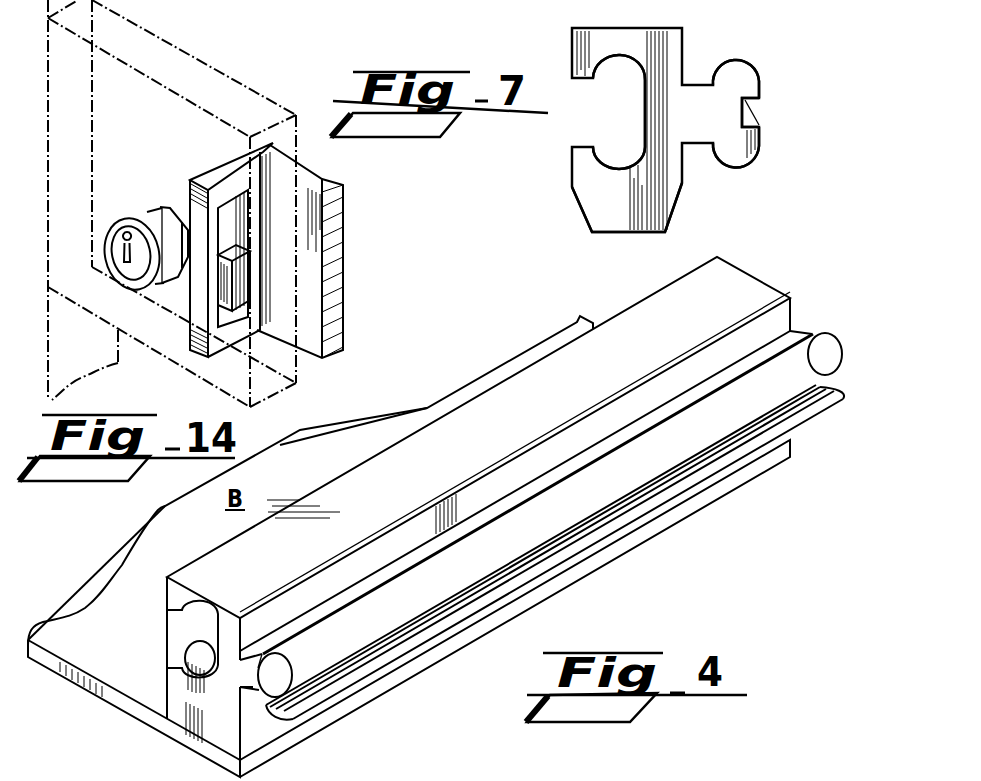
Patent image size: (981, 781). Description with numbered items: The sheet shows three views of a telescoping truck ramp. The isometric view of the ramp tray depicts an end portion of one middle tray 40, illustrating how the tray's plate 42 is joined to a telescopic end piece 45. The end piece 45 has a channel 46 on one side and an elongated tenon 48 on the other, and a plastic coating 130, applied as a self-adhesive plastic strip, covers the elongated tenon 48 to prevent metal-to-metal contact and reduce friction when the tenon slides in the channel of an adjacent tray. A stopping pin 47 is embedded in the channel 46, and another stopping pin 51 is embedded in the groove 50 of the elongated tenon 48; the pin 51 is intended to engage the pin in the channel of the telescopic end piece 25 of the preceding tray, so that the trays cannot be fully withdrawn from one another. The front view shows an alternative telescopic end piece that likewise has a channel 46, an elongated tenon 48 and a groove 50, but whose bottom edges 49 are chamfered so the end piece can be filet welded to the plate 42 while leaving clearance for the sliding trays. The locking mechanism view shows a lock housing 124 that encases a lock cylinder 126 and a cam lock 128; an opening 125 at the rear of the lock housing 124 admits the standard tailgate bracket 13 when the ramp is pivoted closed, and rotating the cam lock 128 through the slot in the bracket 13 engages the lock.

In FIG. 14, the bracket 13 is at (316, 173).
In FIG. 14, the lock housing 124 is at (197, 57).
In FIG. 14, the opening 125 is at (250, 137).
In FIG. 14, the lock cylinder 126 is at (127, 226).
In FIG. 14, the cam lock 128 is at (245, 262).
In FIG. 7, the telescopic end piece 45 is at (716, 21).
In FIG. 4, the telescopic end piece 45 is at (792, 318).
In FIG. 7, the channel 46 is at (616, 59).
In FIG. 4, the channel 46 is at (177, 627).
In FIG. 7, the elongated tenon 48 is at (748, 61).
In FIG. 4, the elongated tenon 48 is at (823, 350).
In FIG. 7, the bottom edges 49 is at (674, 208).
In FIG. 7, the groove 50 is at (745, 100).
In FIG. 4, the groove 50 is at (312, 662).
In FIG. 4, the middle tray 40 is at (678, 560).
In FIG. 4, the plate 42 is at (97, 648).
In FIG. 4, the stopping pin 47 is at (210, 650).
In FIG. 4, the stopping pin 51 is at (823, 392).
In FIG. 4, the plastic coating 130 is at (327, 638).
In FIG. 4, the telescopic end piece 25 is at (93, 780).